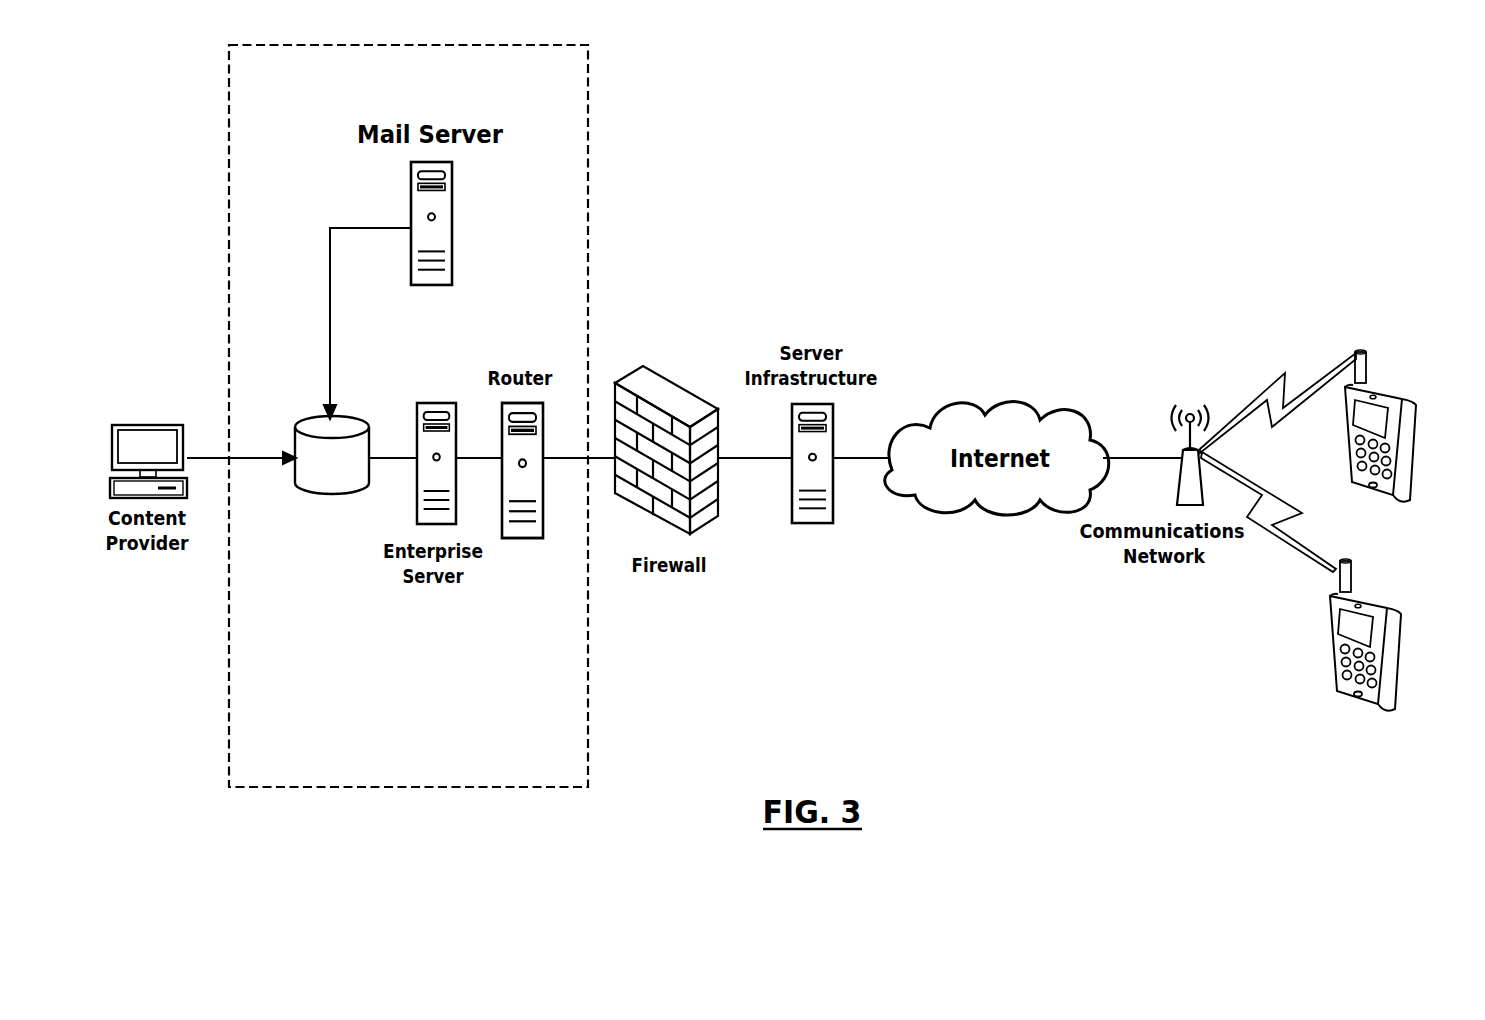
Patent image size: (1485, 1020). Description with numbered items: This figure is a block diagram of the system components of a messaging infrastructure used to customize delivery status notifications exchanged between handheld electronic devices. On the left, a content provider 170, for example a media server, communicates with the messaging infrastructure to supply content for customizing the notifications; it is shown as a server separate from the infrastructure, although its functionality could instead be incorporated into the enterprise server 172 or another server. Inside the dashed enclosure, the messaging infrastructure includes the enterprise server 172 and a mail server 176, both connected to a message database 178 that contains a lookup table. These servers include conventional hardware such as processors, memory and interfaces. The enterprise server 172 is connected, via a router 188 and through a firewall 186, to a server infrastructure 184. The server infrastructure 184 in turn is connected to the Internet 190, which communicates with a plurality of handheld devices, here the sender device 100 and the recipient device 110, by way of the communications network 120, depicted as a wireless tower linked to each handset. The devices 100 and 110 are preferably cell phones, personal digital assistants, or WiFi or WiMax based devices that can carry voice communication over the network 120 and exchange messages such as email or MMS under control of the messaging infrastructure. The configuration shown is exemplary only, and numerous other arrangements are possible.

The sender device 100 is at (1397, 388).
The recipient device 110 is at (1387, 607).
The communications network 120 is at (1190, 410).
The content provider 170 is at (145, 424).
The enterprise server 172 is at (433, 403).
The mail server 176 is at (452, 245).
The message database 178 is at (317, 420).
The server infrastructure 184 is at (813, 523).
The firewall 186 is at (665, 390).
The router 188 is at (520, 538).
The Internet 190 is at (985, 405).